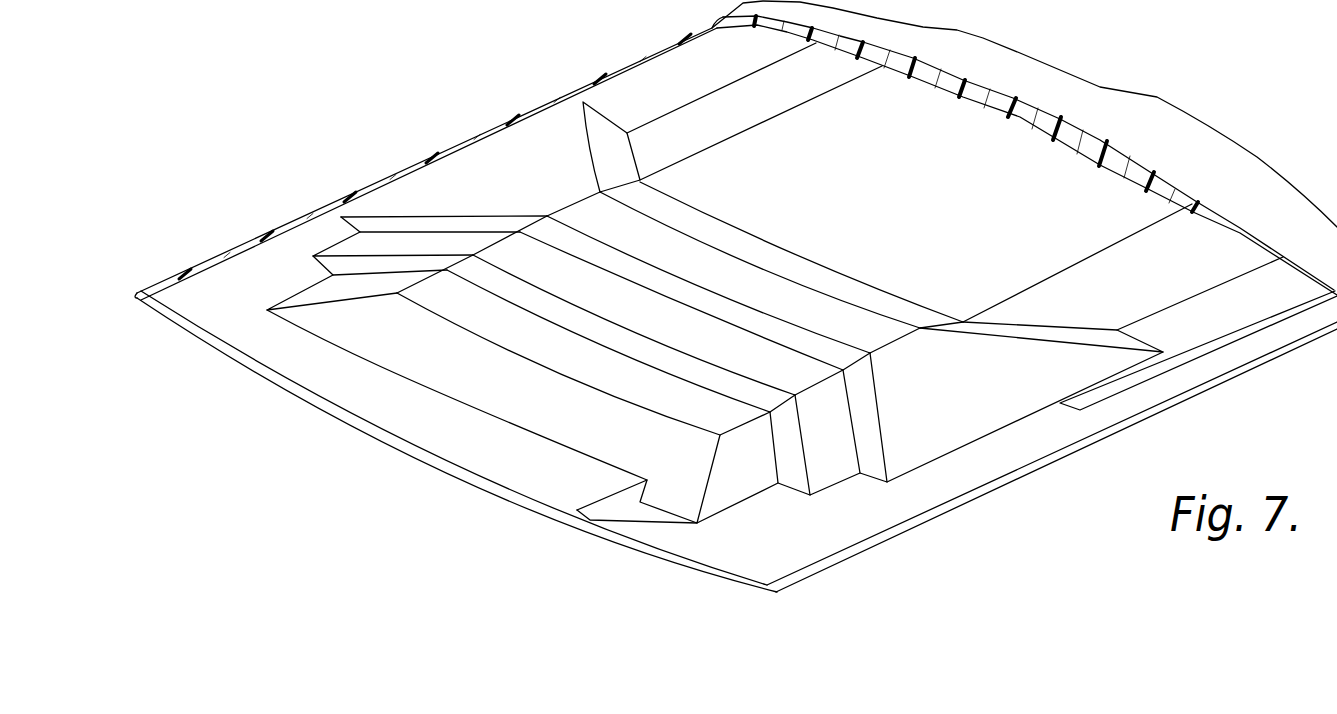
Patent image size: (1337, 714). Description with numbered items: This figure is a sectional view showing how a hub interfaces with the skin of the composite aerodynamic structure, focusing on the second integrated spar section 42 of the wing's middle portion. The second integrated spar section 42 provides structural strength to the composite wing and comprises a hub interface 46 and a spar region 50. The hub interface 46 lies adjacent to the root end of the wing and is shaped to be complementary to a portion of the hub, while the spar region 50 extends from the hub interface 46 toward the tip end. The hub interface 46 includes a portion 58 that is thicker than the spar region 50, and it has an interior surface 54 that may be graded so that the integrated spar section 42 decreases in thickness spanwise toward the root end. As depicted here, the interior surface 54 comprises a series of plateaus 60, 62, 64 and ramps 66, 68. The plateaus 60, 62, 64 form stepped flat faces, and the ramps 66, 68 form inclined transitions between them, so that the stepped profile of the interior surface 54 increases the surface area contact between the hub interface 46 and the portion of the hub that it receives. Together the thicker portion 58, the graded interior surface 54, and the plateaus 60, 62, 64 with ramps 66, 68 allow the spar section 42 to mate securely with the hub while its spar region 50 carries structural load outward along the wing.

The second integrated spar section 42 is at (921, 270).
The hub interface 46 is at (575, 247).
The spar region 50 is at (793, 128).
The interior surface 54 is at (676, 331).
The portion 58 is at (773, 292).
The plateau 60 is at (427, 297).
The plateau 62 is at (515, 258).
The plateau 64 is at (592, 208).
The ramp 66 is at (683, 452).
The ramp 68 is at (843, 357).